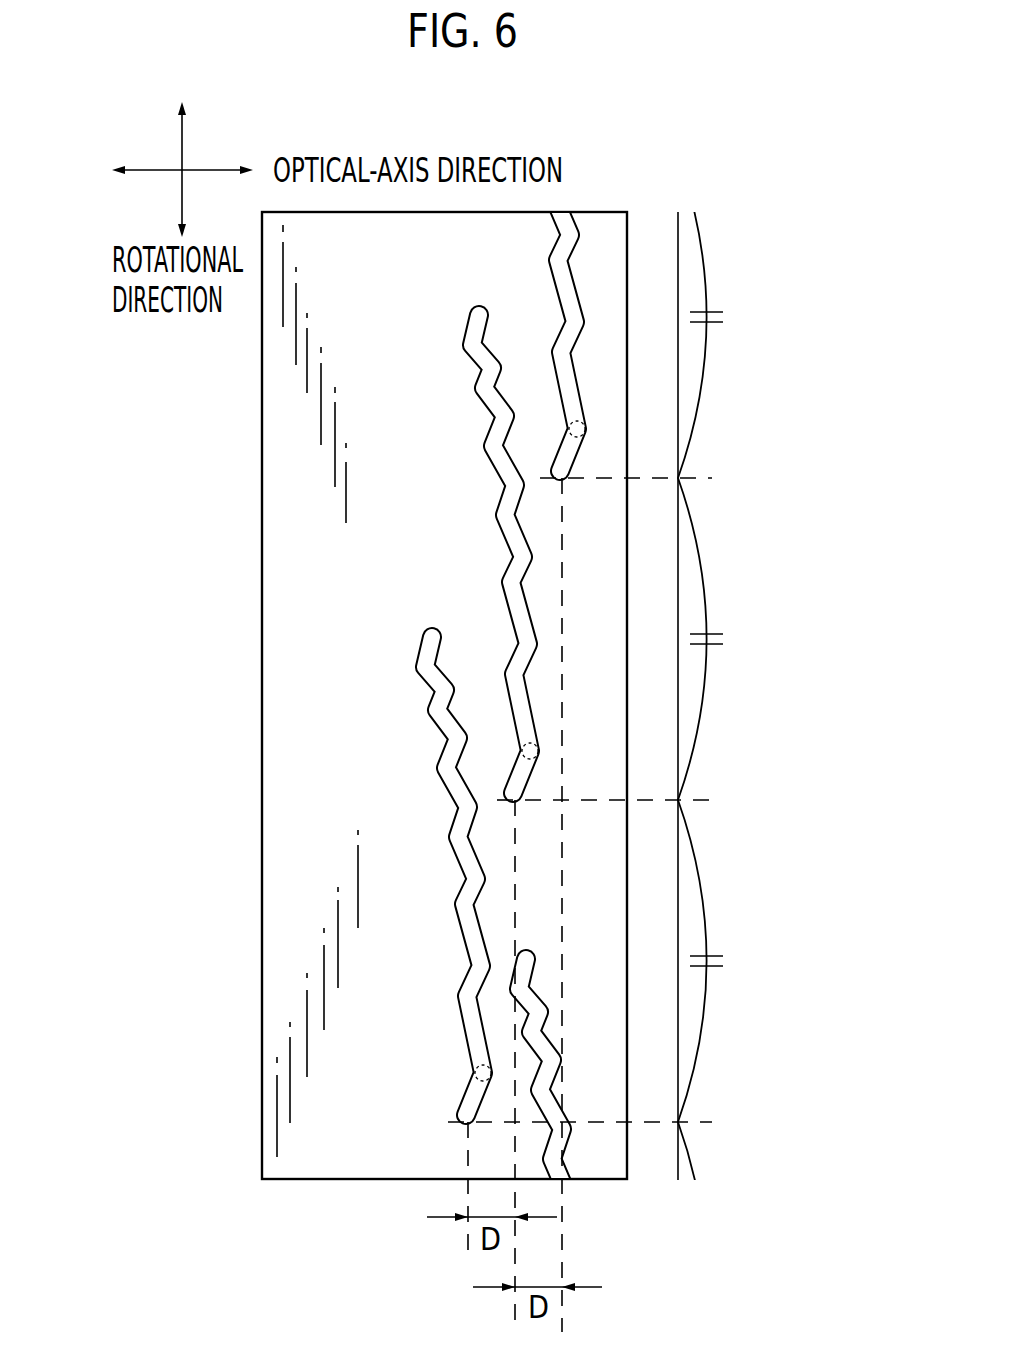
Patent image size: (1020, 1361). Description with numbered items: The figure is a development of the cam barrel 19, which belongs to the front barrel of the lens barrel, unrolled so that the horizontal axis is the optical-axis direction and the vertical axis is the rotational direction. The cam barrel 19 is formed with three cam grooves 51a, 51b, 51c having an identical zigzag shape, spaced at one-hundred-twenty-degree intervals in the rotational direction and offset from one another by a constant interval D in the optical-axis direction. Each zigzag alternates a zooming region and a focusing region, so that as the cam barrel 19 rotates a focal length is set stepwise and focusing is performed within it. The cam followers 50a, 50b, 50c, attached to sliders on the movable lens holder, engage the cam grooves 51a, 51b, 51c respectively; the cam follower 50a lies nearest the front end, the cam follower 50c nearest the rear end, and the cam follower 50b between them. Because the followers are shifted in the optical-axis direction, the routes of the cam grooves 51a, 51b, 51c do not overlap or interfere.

The cam barrel 19 is at (288, 779).
The cam groove 51a is at (472, 980).
The cam groove 51b is at (512, 575).
The cam groove 51c is at (556, 252).
The cam follower 50a is at (478, 1077).
The cam follower 50b is at (522, 752).
The cam follower 50c is at (570, 430).